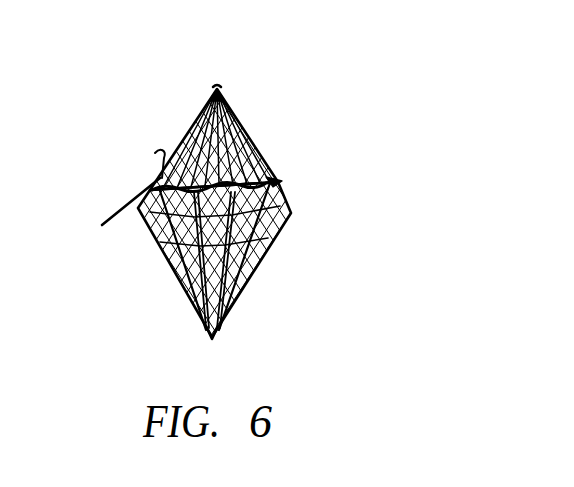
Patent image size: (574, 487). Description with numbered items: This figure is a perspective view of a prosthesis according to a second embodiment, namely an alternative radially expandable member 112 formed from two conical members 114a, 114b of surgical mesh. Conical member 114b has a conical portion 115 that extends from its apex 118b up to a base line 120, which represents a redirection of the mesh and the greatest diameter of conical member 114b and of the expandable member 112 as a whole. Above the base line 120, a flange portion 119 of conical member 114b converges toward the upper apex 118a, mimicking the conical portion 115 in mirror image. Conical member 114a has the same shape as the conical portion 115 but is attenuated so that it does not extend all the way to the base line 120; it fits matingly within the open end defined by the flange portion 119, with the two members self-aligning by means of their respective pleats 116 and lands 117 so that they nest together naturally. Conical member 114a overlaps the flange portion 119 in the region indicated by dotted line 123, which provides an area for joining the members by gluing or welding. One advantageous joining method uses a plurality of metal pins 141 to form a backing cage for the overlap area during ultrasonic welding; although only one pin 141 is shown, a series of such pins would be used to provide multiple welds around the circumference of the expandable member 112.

The radially expandable member 112 is at (117, 202).
The conical member 114a is at (266, 122).
The conical member 114b is at (261, 293).
The conical portion 115 is at (175, 280).
The pleats 116 is at (188, 138).
The lands 117 is at (191, 100).
The apex 118a is at (216, 86).
The apex 118b is at (211, 333).
The flange portion 119 is at (152, 238).
The base line 120 is at (293, 227).
The dotted line 123 is at (288, 182).
The metal pin 141 is at (155, 153).